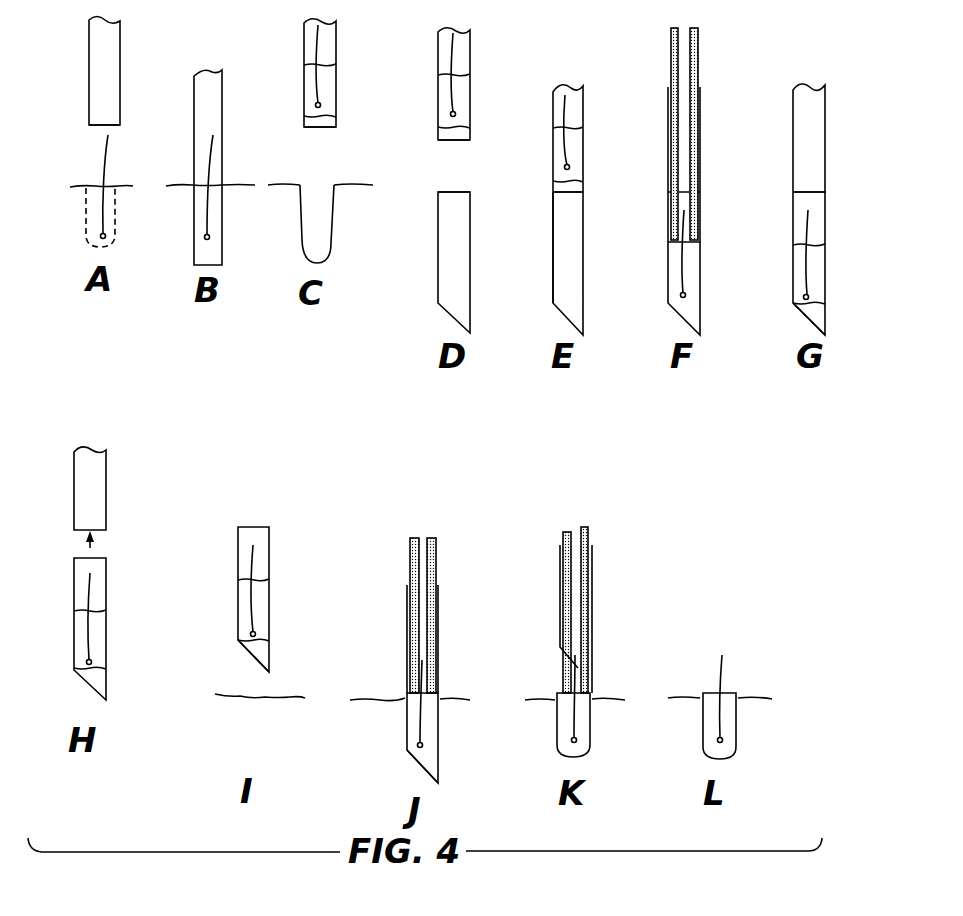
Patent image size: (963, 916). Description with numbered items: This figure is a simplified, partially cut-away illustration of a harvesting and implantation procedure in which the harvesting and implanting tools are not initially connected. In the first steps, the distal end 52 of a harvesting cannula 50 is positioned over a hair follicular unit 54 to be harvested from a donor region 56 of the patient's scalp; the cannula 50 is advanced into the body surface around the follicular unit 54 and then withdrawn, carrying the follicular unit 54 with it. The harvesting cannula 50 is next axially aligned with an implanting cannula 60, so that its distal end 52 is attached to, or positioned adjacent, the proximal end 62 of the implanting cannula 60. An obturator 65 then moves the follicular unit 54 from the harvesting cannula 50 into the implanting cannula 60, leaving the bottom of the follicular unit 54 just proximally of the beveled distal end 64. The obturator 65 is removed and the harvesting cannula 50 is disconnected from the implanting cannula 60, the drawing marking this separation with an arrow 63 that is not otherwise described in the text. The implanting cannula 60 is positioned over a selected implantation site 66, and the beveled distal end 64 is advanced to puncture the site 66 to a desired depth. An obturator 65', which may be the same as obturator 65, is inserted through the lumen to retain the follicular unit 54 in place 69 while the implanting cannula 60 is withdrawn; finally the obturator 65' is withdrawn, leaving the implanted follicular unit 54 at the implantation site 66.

The harvesting cannula 50 is at (120, 27).
The distal end of harvesting cannula 52 is at (95, 124).
The hair follicular unit 54 is at (104, 160).
The donor region 56 is at (78, 188).
The implanting cannula 60 is at (437, 243).
The proximal end of implanting cannula 62 is at (458, 192).
The retraction arrow 63 is at (90, 548).
The beveled distal end 64 is at (814, 331).
The obturator 65 is at (716, 134).
The obturator 65' is at (539, 610).
The implantation site 66 is at (249, 705).
The place of follicular unit retention 69 is at (440, 694).